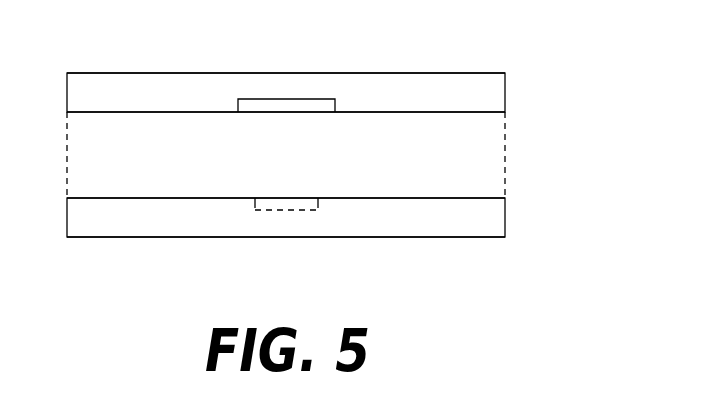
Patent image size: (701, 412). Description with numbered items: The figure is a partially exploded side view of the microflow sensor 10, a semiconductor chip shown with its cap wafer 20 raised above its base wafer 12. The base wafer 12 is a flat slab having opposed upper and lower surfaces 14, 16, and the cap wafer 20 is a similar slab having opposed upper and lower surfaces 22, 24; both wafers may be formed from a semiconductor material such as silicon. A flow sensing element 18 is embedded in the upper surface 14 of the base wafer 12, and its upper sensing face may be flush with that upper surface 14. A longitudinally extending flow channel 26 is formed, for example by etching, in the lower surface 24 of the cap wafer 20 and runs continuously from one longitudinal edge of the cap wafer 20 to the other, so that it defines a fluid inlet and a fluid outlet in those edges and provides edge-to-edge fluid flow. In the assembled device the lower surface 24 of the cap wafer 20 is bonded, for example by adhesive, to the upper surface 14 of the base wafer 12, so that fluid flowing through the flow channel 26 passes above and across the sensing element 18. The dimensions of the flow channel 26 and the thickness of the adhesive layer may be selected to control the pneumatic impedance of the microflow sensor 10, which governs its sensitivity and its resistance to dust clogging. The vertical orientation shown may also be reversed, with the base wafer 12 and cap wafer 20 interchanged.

The microflow sensor 10 is at (520, 148).
The base wafer 12 is at (506, 210).
The upper surface of the base wafer 14 is at (179, 198).
The lower surface of the base wafer 16 is at (418, 238).
The flow sensing element 18 is at (262, 237).
The cap wafer 20 is at (506, 90).
The upper surface of the cap wafer 22 is at (414, 73).
The lower surface of the cap wafer 24 is at (112, 113).
The longitudinally extending flow channel 26 is at (300, 86).